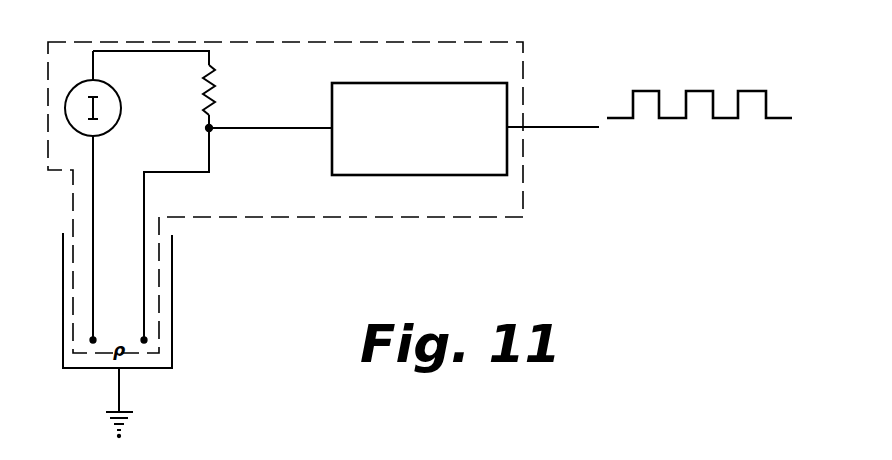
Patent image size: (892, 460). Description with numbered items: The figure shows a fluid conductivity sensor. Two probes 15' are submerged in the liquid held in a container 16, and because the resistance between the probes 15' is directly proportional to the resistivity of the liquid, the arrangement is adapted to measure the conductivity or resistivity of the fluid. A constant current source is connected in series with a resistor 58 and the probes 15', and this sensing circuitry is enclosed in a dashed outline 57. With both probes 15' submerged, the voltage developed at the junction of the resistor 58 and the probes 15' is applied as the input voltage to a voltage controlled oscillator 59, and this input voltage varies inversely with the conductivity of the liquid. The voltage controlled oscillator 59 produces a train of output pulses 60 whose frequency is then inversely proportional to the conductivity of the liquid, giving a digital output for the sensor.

The oscillator circuit module 57 is at (415, 38).
The resistor 58 is at (212, 82).
The voltage controlled oscillator 59 is at (378, 83).
The output pulses 60 is at (645, 91).
The probes 15' is at (180, 263).
The container 16 is at (172, 278).